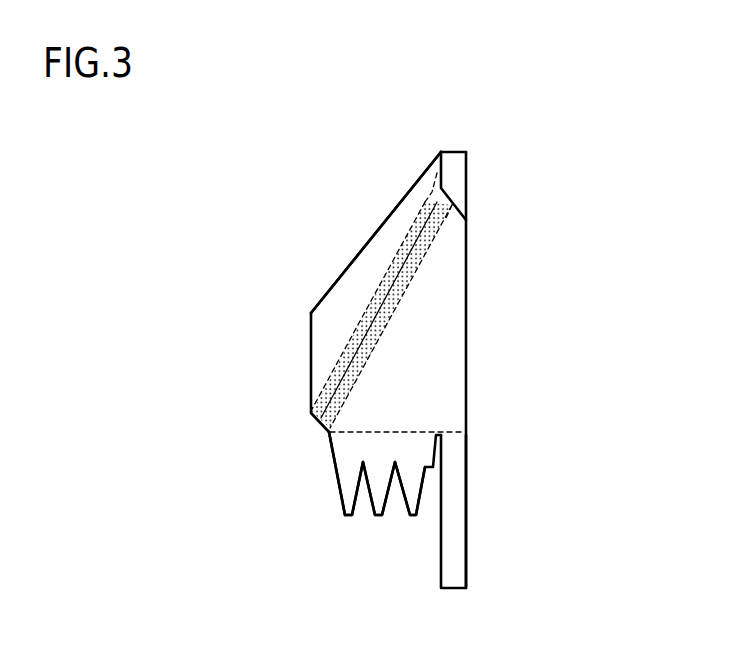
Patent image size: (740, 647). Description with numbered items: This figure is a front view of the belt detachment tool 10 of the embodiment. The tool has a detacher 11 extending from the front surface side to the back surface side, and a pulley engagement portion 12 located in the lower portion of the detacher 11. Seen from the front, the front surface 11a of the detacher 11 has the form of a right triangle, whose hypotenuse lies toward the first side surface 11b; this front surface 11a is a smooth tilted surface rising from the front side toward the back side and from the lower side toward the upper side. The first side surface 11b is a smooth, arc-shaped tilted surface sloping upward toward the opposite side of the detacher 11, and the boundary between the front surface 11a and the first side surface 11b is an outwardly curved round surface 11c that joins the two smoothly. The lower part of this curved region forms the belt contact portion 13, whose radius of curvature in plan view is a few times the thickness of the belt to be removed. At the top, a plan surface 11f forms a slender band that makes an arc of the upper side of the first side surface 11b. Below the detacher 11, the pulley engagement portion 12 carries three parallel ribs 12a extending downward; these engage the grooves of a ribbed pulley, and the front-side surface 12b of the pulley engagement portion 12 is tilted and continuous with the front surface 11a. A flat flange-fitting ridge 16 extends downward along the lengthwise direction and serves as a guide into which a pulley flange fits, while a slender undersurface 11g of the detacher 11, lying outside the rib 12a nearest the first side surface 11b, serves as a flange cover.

The belt detachment tool 10 is at (563, 61).
The detacher 11 is at (384, 219).
The front surface 11a is at (457, 317).
The first side surface 11b is at (357, 280).
The round surface 11c is at (438, 196).
The plan surface 11f is at (457, 178).
The undersurface 11g is at (320, 428).
The pulley engagement portion 12 is at (333, 474).
The ribs 12a is at (410, 500).
The surface 12b is at (343, 441).
The belt contact portion 13 is at (355, 331).
The flange-fitting ridge 16 is at (457, 513).